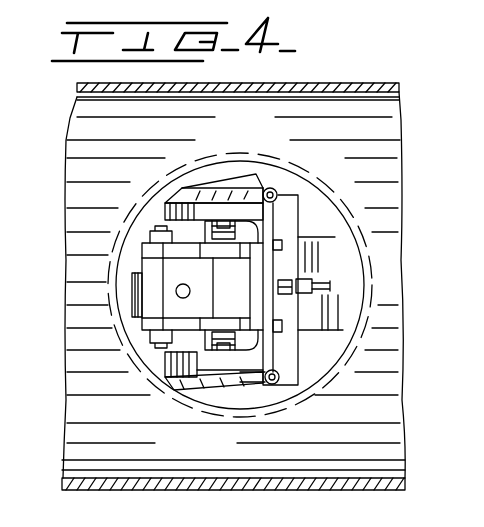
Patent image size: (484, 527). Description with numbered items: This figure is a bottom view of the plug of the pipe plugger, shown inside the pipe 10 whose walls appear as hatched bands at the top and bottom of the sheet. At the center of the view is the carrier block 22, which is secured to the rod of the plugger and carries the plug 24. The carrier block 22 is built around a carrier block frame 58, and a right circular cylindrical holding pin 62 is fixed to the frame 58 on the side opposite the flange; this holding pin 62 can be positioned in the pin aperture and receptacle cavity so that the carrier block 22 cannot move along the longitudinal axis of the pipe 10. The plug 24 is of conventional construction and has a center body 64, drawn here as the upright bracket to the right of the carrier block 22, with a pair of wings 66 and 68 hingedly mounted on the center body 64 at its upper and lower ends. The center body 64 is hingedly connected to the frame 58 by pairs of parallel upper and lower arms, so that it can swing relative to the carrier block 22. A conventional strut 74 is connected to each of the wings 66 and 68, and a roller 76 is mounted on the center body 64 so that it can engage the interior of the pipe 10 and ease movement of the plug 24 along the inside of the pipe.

The pipe 10 is at (406, 91).
The carrier block 22 is at (133, 275).
The plug 24 is at (298, 268).
The carrier block frame 58 is at (180, 292).
The holding pin 62 is at (172, 300).
The center body 64 is at (285, 233).
The wing 66 is at (232, 188).
The wing 68 is at (236, 382).
The strut 74 is at (212, 238).
The roller 76 is at (305, 285).